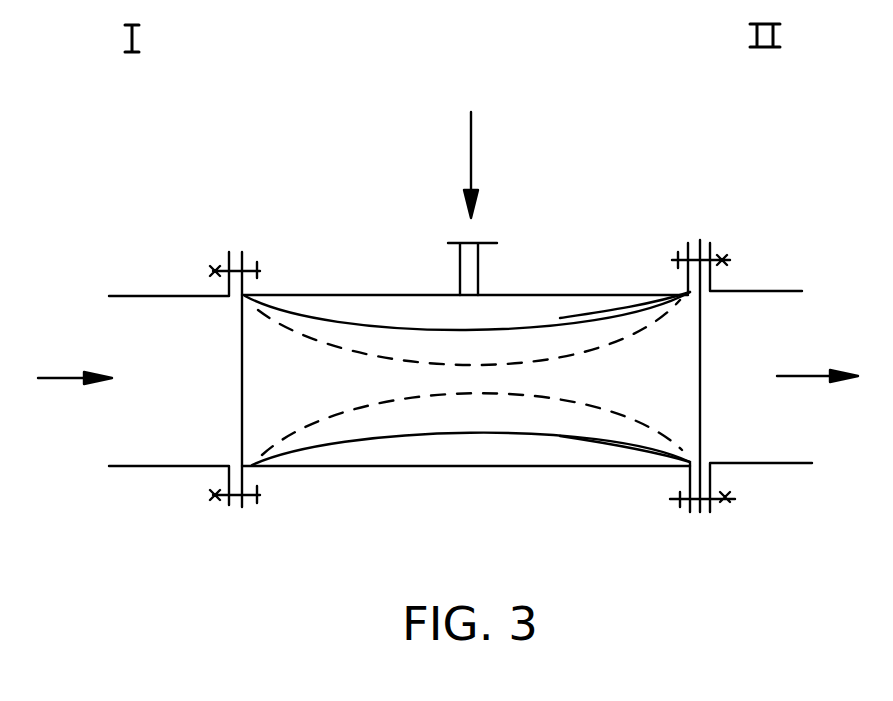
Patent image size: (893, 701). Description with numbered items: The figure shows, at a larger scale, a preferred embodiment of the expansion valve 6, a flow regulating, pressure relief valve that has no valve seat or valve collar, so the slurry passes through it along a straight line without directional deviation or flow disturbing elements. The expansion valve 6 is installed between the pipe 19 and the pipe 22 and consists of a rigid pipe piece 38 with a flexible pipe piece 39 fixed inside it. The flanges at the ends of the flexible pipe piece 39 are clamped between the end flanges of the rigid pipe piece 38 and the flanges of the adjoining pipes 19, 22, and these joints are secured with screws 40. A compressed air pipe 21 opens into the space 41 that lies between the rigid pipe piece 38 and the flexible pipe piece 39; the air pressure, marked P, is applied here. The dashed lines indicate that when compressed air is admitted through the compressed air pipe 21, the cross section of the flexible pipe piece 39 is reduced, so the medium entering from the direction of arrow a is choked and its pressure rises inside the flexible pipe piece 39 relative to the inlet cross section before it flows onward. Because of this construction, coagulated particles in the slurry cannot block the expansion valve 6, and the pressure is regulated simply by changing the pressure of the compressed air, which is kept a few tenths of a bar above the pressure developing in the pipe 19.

The expansion valve 6 is at (395, 496).
The pipe 19 is at (149, 452).
The compressed air pipe 21 is at (463, 270).
The pipe 22 is at (778, 291).
The rigid pipe piece 38 is at (463, 470).
The flexible pipe piece 39 is at (605, 317).
The screws 40 is at (215, 262).
The space 41 is at (351, 305).
The pressure P is at (471, 140).
The arrow a is at (59, 380).